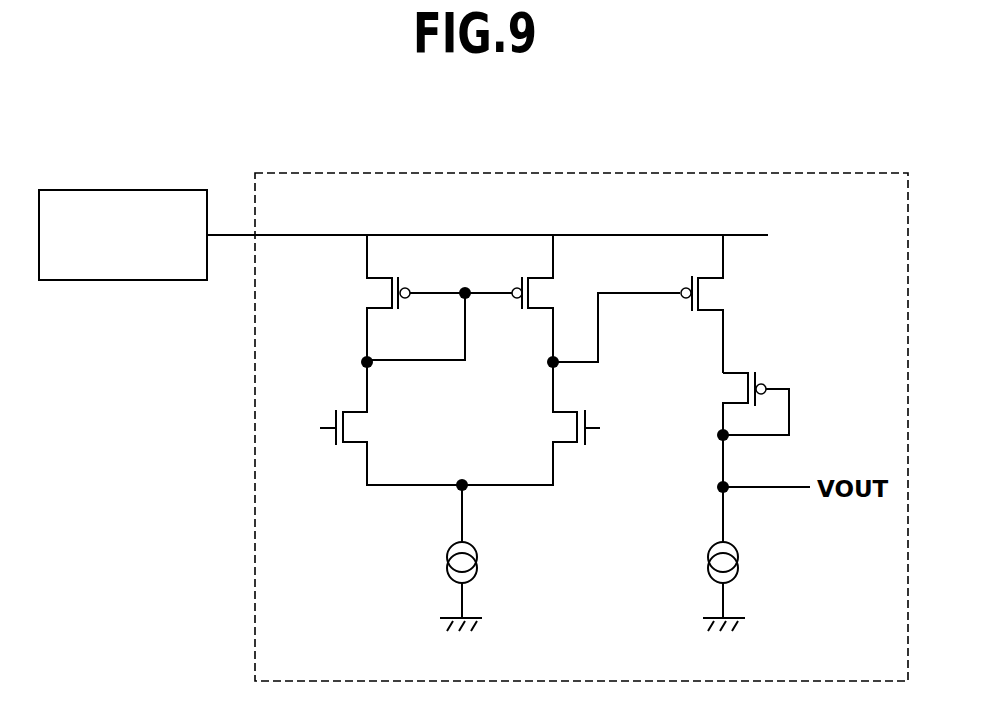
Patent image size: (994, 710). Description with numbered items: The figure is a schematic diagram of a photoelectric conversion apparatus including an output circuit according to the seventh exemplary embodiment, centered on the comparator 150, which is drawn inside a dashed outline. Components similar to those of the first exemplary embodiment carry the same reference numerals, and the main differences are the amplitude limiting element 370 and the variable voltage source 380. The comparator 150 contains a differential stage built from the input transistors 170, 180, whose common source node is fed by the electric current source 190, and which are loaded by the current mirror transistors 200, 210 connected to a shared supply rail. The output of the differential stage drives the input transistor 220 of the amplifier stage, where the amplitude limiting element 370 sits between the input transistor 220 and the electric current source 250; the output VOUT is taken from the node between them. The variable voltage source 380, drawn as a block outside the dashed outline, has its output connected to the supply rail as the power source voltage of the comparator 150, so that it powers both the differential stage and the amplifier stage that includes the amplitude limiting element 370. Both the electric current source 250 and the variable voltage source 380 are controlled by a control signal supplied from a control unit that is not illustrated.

The comparator 150 is at (606, 173).
The input transistor 170 is at (341, 445).
The input transistor 180 is at (580, 445).
The electric current source 190 is at (447, 575).
The current mirror transistor 200 is at (367, 292).
The current mirror transistor 210 is at (528, 278).
The input transistor 220 is at (728, 296).
The electric current source 250 is at (706, 576).
The amplitude limiting element 370 is at (722, 388).
The variable voltage source 380 is at (122, 190).